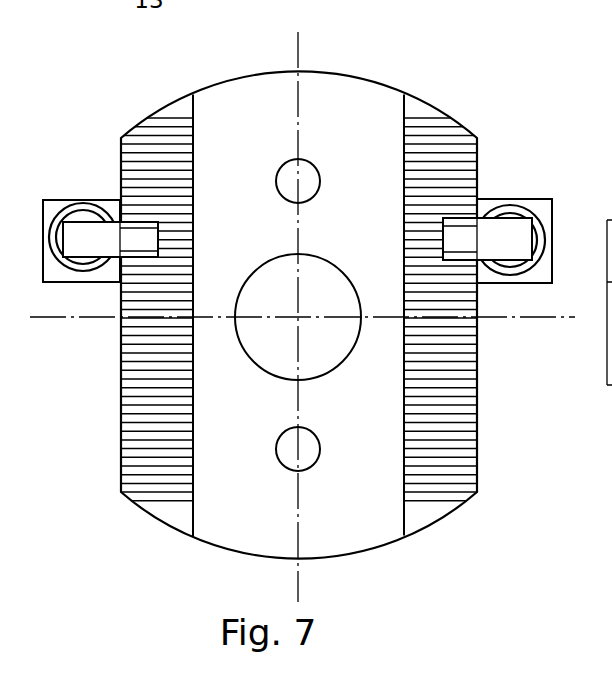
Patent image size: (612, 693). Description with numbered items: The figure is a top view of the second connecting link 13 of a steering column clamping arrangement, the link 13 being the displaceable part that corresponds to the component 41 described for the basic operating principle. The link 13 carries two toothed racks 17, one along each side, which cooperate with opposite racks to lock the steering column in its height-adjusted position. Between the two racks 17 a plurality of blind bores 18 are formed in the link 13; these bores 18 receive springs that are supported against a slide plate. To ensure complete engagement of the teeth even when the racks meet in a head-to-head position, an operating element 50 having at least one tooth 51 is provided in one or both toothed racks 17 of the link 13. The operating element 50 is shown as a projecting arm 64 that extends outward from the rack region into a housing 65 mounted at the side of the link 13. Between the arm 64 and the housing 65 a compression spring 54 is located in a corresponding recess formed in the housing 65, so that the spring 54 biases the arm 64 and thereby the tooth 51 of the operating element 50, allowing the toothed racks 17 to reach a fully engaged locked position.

The second connecting link 13 is at (499, 153).
The toothed rack 17 is at (150, 152).
The blind bore 18 is at (305, 453).
The component 41 is at (218, 525).
The operating element 50 is at (461, 286).
The tooth 51 is at (145, 240).
The compression spring 54 is at (86, 215).
The projecting arm 64 is at (87, 248).
The housing 65 is at (52, 268).